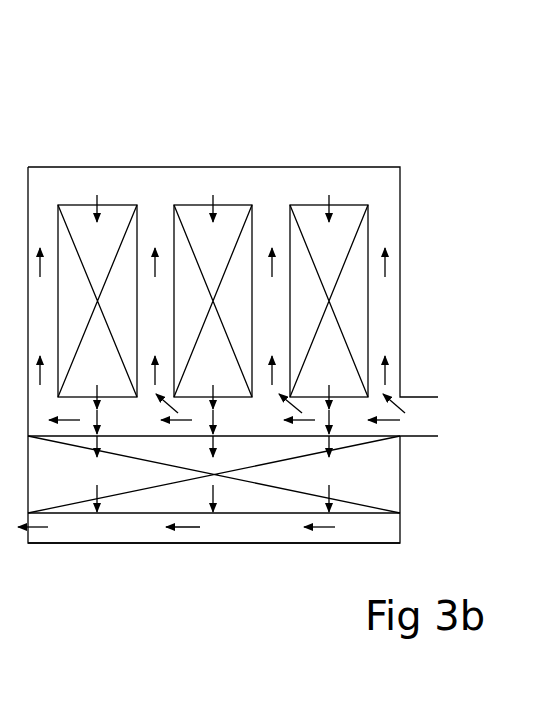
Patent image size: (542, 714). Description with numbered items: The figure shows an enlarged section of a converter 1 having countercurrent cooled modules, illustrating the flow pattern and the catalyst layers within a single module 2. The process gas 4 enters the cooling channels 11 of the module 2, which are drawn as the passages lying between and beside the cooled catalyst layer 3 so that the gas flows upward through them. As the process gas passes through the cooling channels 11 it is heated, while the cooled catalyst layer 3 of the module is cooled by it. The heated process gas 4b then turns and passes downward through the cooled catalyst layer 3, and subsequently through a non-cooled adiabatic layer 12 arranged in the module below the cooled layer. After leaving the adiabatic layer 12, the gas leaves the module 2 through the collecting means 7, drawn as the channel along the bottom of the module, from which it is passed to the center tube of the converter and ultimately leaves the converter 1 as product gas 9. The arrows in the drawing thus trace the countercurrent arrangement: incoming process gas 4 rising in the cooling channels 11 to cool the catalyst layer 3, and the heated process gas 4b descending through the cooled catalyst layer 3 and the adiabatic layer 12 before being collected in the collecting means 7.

The converter 1 is at (0, 357).
The module 2 is at (400, 225).
The catalyst layer 3 is at (348, 312).
The process gas 4 is at (448, 420).
The heated process gas 4b is at (330, 197).
The collecting means 7 is at (250, 533).
The product gas 9 is at (35, 530).
The cooling channels 11 is at (157, 297).
The non-cooled adiabatic layer 12 is at (375, 478).